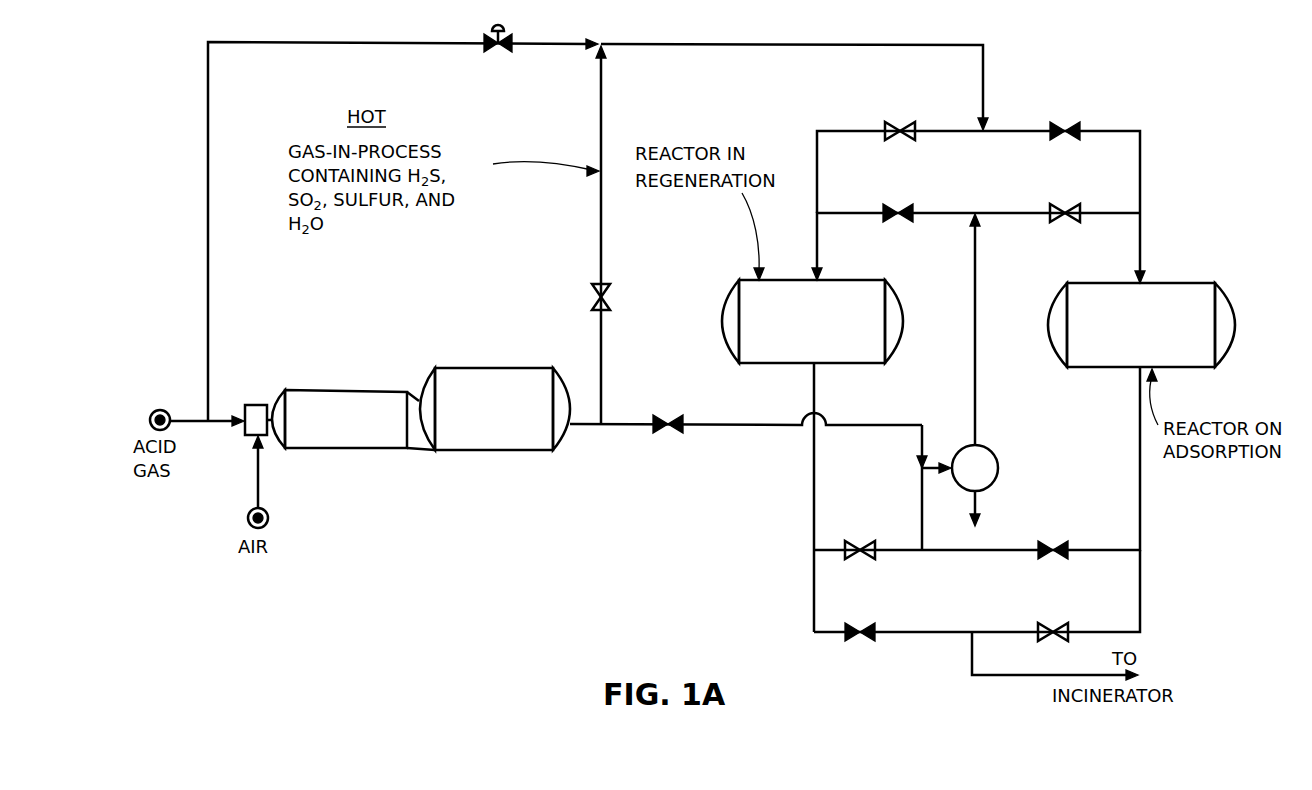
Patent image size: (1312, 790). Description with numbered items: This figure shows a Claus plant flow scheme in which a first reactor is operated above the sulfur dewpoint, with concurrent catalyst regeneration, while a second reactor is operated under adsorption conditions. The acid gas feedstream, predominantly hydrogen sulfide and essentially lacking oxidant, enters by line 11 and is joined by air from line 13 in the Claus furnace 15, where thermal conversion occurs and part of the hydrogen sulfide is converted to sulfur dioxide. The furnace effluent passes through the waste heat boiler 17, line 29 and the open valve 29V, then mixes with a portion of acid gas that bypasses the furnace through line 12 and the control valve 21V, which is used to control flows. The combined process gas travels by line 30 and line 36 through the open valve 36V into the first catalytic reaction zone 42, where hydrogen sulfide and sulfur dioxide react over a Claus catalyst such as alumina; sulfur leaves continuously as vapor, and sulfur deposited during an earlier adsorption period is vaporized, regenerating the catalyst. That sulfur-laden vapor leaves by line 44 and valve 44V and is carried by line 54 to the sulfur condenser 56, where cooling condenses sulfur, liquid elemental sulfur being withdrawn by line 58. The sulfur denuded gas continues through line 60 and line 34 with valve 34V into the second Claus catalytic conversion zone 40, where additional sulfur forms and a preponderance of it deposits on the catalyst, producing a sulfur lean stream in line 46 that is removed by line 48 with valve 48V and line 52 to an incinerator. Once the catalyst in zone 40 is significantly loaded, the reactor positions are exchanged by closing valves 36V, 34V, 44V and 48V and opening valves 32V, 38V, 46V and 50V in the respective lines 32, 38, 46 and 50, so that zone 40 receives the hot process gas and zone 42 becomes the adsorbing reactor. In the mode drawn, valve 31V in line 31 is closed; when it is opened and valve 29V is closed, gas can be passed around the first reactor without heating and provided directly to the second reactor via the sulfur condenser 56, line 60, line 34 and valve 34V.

The acid gas feed line 11 is at (185, 421).
The furnace bypass line 12 is at (208, 308).
The air line 13 is at (250, 487).
The Claus furnace 15 is at (313, 450).
The waste heat boiler 17 is at (473, 452).
The control valve 21V is at (490, 52).
The furnace effluent line 29 is at (604, 356).
The valve in line 29 29V is at (597, 296).
The process gas line 30 is at (687, 47).
The bypass line around first reactor 31 is at (725, 427).
The valve in line 31 31V is at (662, 435).
The line to second reactor 32 is at (1008, 131).
The valve in line 32 32V is at (1072, 121).
The line to second reactor from condenser 34 is at (1005, 213).
The valve in line 34 34V is at (1052, 222).
The line to first reactor 36 is at (938, 130).
The valve in line 36 36V is at (912, 138).
The line to first reactor from condenser 38 is at (935, 214).
The valve in line 38 38V is at (894, 206).
The second Claus catalytic conversion zone 40 is at (1180, 283).
The first catalytic reaction zone 42 is at (905, 313).
The first reactor outlet line 44 is at (820, 465).
The valve in line 44 44V is at (868, 545).
The second reactor outlet line 46 is at (1140, 482).
The valve in line 46 46V is at (1055, 548).
The line to incinerator from second reactor 48 is at (1140, 598).
The valve in line 48 48V is at (1043, 628).
The line to incinerator from first reactor 50 is at (828, 630).
The valve in line 50 50V is at (872, 622).
The incinerator line 52 is at (1040, 675).
The condenser inlet line 54 is at (920, 490).
The sulfur condenser 56 is at (995, 452).
The liquid sulfur line 58 is at (983, 505).
The condenser effluent line 60 is at (978, 322).